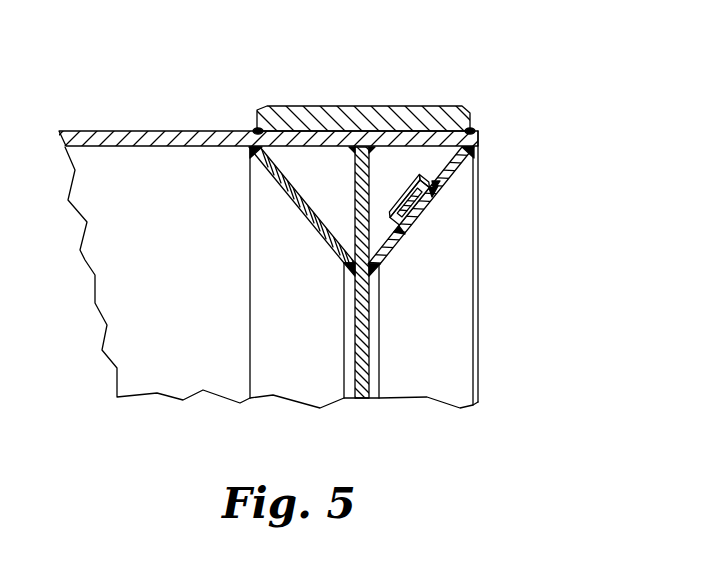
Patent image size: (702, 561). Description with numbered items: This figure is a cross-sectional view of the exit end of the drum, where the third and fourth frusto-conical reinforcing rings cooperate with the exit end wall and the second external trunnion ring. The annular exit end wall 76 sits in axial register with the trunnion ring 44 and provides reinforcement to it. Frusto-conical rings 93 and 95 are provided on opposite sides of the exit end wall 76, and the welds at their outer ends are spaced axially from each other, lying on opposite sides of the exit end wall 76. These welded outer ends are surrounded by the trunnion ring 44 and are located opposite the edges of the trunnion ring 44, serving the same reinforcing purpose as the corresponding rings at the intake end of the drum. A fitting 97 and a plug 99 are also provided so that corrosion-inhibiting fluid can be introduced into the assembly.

The trunnion ring 44 is at (358, 106).
The exit end wall 76 is at (365, 333).
The frusto-conical ring 93 is at (288, 199).
The frusto-conical ring 95 is at (435, 181).
The fitting 97 is at (410, 222).
The plug 99 is at (419, 203).